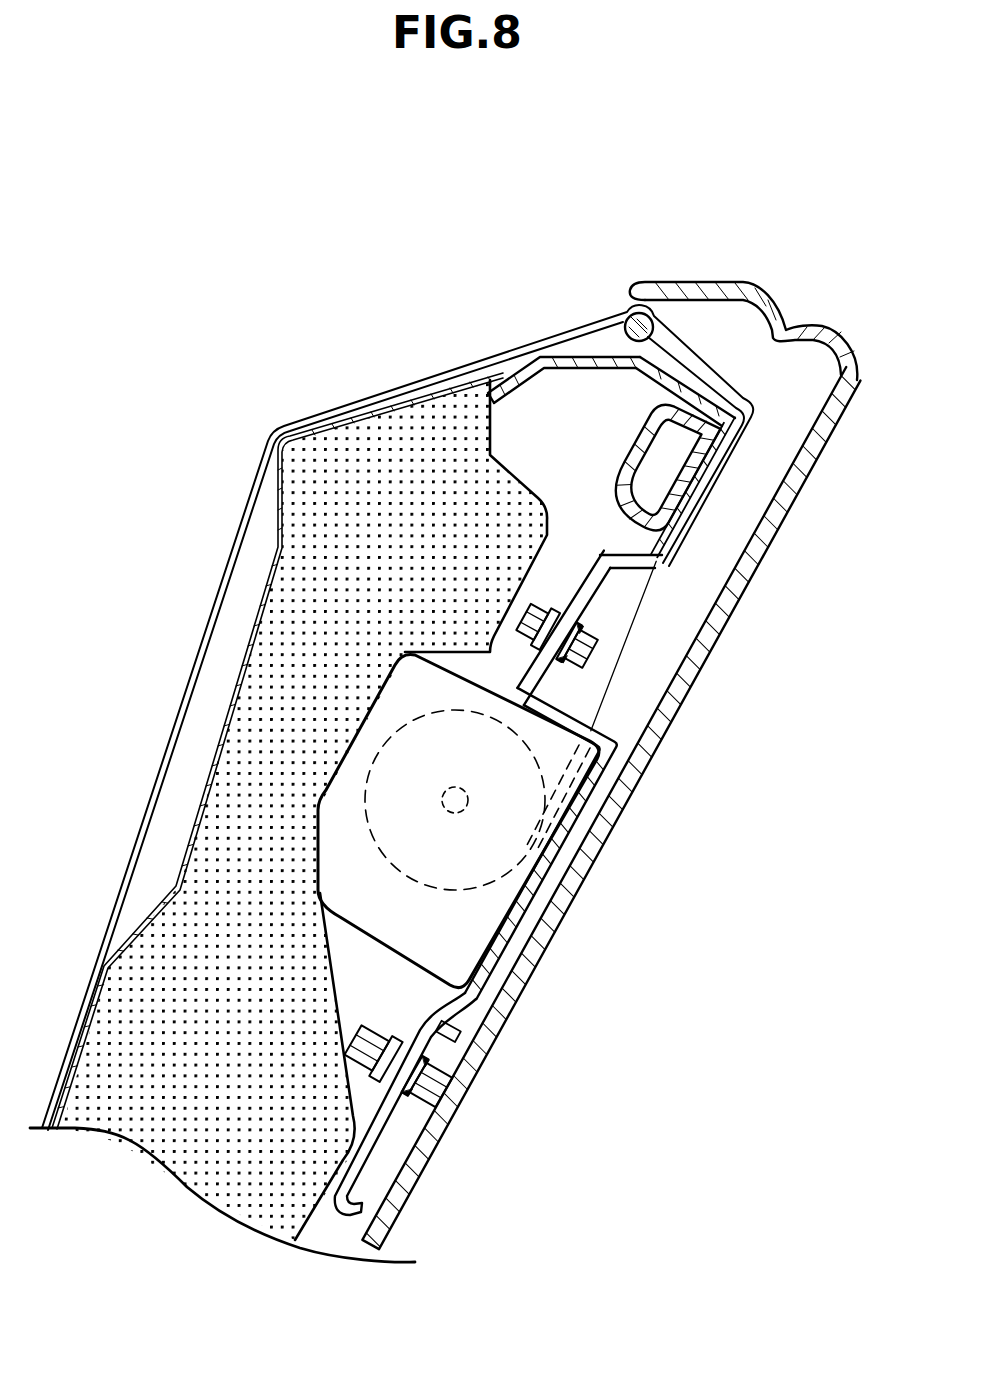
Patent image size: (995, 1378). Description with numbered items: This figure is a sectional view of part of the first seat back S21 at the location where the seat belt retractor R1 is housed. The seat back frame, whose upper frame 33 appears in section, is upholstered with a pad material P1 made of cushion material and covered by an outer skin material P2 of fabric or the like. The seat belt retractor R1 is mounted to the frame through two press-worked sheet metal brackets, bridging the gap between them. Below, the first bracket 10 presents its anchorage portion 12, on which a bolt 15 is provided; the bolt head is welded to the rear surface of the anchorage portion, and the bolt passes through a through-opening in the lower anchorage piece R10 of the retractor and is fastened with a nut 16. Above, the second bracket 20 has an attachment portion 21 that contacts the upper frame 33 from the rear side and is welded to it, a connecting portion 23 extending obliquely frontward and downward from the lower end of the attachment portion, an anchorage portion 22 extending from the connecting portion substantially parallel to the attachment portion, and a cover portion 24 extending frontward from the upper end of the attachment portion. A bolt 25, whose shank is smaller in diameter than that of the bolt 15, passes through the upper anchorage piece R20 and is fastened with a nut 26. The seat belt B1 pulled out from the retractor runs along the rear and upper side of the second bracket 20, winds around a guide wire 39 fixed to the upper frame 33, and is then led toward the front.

The first seat back S21 is at (210, 338).
The seat belt B1 is at (230, 568).
The pad material P1 is at (268, 738).
The outer skin material P2 is at (200, 792).
The seat belt retractor R1 is at (356, 724).
The second bracket 20 is at (566, 345).
The cover portion 24 is at (680, 386).
The guide wire 39 is at (633, 314).
The upper frame 33 is at (660, 466).
The attachment portion 21 is at (693, 485).
The anchorage portion 22 is at (564, 627).
The connecting portion 23 is at (645, 562).
The bolt 25 is at (529, 787).
The nut 26 is at (556, 636).
The upper anchorage piece R20 is at (569, 642).
The nut 16 is at (372, 1051).
The bolt 15 is at (427, 1083).
The lower anchorage piece R10 is at (415, 1076).
The anchorage portion 12 is at (405, 1104).
The first bracket 10 is at (612, 765).